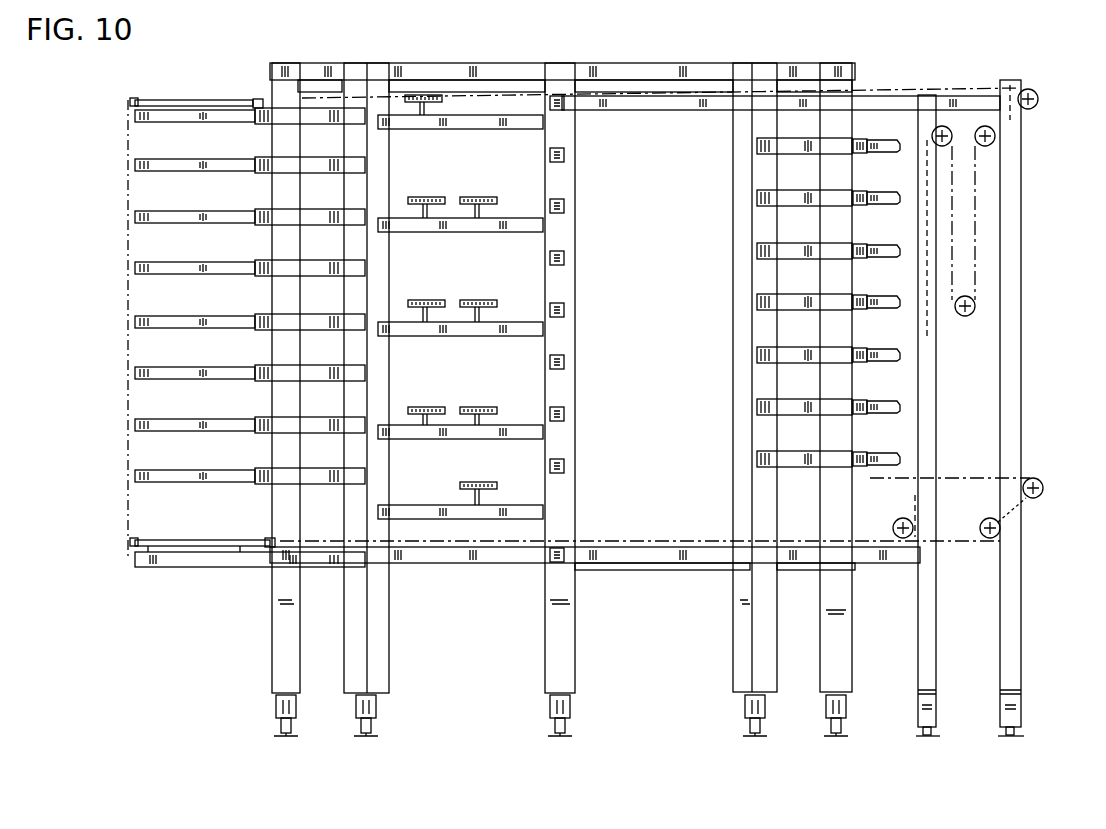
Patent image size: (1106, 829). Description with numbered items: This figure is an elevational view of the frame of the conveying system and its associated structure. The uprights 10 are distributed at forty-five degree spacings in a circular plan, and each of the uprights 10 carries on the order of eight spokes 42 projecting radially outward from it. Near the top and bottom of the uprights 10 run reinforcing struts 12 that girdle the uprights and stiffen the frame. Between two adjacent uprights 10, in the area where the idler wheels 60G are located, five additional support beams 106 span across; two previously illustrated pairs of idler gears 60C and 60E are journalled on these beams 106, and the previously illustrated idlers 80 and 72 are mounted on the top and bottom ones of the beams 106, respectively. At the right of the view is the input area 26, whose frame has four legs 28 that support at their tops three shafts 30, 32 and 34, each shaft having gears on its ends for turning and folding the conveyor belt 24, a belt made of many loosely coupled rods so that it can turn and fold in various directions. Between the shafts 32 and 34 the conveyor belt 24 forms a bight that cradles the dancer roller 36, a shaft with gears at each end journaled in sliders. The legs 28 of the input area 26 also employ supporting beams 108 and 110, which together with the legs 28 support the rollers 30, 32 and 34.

The uprights 10 is at (286, 640).
The reinforcing struts 12 is at (496, 63).
The conveyor belt 24 is at (216, 99).
The input area 26 is at (1010, 70).
The legs 28 is at (1010, 668).
The shaft 30 is at (1034, 92).
The shaft 32 is at (996, 138).
The shaft 34 is at (946, 146).
The dancer roller 36 is at (976, 306).
The spokes 42 is at (310, 268).
The idler gears 60C is at (470, 196).
The idler gears 60E is at (470, 299).
The idler wheels 60G is at (470, 406).
The idler 72 is at (474, 482).
The idler 80 is at (428, 95).
The support beams 106 is at (540, 130).
The supporting beam 108 is at (668, 547).
The supporting beam 110 is at (706, 110).